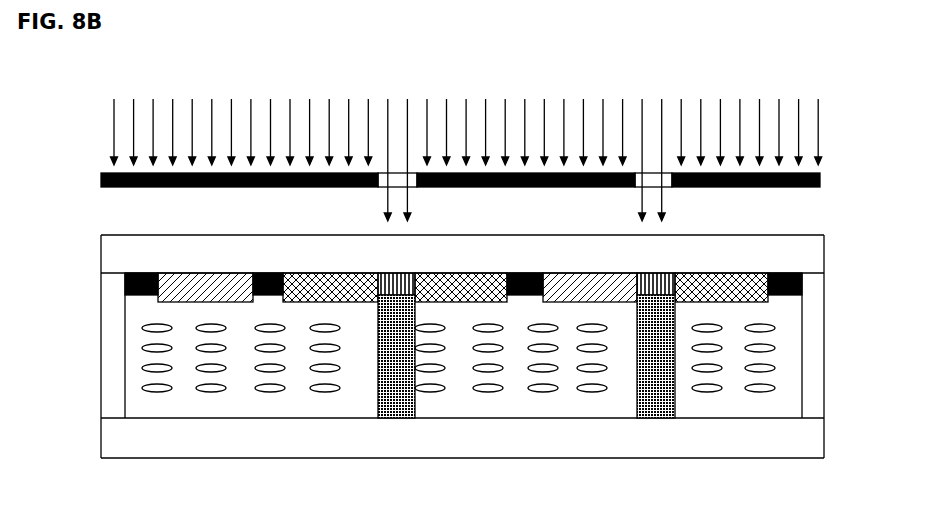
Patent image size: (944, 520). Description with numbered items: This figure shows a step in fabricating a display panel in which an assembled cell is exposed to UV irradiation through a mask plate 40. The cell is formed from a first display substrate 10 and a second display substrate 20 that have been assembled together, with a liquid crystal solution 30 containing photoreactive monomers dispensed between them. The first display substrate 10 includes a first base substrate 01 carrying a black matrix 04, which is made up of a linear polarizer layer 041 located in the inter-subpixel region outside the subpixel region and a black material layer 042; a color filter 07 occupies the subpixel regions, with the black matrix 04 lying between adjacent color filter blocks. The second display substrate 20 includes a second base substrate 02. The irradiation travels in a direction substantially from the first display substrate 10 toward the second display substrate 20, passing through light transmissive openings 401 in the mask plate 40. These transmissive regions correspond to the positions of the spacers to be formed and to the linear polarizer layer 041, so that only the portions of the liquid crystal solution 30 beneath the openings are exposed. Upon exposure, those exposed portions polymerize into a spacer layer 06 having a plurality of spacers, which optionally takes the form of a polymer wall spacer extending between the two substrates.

The first display substrate 10 is at (101, 236).
The second display substrate 20 is at (101, 408).
The mask plate 40 is at (820, 180).
The mask opening 401 is at (668, 187).
The linear polarizer layer 041 is at (383, 273).
The black material layer 042 is at (527, 273).
The second base substrate 02 is at (793, 257).
The black matrix 04 is at (802, 287).
The color filter 07 is at (745, 302).
The liquid crystal solution 30 is at (785, 357).
The first base substrate 01 is at (793, 443).
The spacer layer 06 is at (395, 418).